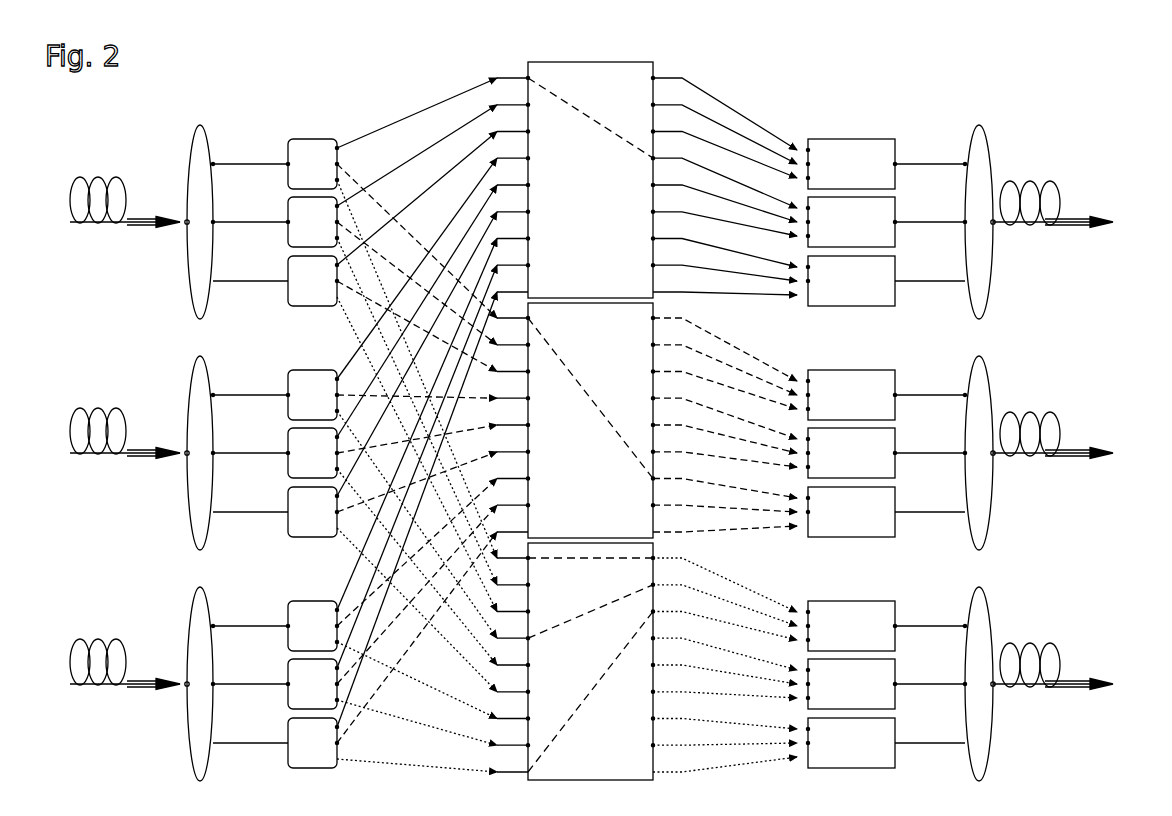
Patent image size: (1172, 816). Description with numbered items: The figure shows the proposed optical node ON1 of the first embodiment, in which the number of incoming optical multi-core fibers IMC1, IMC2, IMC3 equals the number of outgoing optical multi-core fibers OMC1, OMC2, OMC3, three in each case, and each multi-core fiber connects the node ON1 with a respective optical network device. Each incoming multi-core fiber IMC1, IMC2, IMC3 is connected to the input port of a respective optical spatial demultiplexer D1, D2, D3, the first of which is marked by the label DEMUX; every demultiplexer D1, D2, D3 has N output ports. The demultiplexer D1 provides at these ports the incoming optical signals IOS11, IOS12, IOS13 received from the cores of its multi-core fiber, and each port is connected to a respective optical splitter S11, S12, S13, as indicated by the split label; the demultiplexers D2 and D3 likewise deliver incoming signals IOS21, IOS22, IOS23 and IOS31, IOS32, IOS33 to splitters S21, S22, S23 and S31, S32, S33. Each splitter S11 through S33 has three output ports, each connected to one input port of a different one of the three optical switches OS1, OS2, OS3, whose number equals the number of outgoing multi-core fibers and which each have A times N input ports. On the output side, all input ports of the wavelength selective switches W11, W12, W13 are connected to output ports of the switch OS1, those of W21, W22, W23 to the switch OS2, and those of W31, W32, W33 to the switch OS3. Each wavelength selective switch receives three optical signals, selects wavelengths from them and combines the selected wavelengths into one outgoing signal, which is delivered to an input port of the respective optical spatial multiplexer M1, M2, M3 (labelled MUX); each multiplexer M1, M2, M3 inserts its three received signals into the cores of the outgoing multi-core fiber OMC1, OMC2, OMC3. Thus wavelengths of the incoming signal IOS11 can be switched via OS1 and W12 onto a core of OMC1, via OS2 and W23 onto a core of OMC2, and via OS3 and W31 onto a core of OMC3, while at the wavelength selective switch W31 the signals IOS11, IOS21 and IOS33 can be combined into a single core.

The optical node ON1 is at (350, 93).
The incoming optical multi-core fiber IMC1 is at (76, 176).
The incoming optical multi-core fiber IMC2 is at (110, 436).
The incoming optical multi-core fiber IMC3 is at (110, 667).
The optical spatial demultiplexer D1 is at (188, 164).
The optical spatial demultiplexer D2 is at (175, 453).
The optical spatial demultiplexer D3 is at (175, 684).
The demultiplexer DEMUX is at (183, 127).
The multiplexer MUX is at (997, 128).
The splitter split is at (302, 128).
The incoming optical signal IOS11 is at (250, 162).
The incoming optical signal IOS12 is at (250, 220).
The incoming optical signal IOS13 is at (250, 279).
The incoming optical signal IOS21 is at (250, 393).
The incoming optical signal IOS22 is at (250, 451).
The incoming optical signal IOS23 is at (250, 510).
The incoming optical signal IOS31 is at (250, 624).
The incoming optical signal IOS32 is at (250, 682).
The incoming optical signal IOS33 is at (250, 741).
The optical splitter S11 is at (327, 176).
The optical splitter S12 is at (327, 234).
The optical splitter S13 is at (327, 293).
The optical splitter S21 is at (312, 395).
The optical splitter S22 is at (312, 453).
The optical splitter S23 is at (312, 512).
The optical splitter S31 is at (312, 626).
The optical splitter S32 is at (312, 684).
The optical splitter S33 is at (312, 743).
The optical switch OS1 is at (633, 103).
The optical switch OS2 is at (633, 343).
The optical switch OS3 is at (587, 597).
The wavelength selective switch W11 is at (898, 150).
The wavelength selective switch W12 is at (898, 211).
The wavelength selective switch W13 is at (898, 270).
The wavelength selective switch W21 is at (886, 382).
The wavelength selective switch W22 is at (886, 441).
The wavelength selective switch W23 is at (886, 500).
The wavelength selective switch W31 is at (886, 613).
The wavelength selective switch W32 is at (886, 672).
The wavelength selective switch W33 is at (886, 731).
The optical spatial multiplexer M1 is at (994, 152).
The optical spatial multiplexer M2 is at (1013, 453).
The optical spatial multiplexer M3 is at (1013, 684).
The outgoing optical multi-core fiber OMC1 is at (1059, 190).
The outgoing optical multi-core fiber OMC2 is at (1066, 447).
The outgoing optical multi-core fiber OMC3 is at (1066, 678).